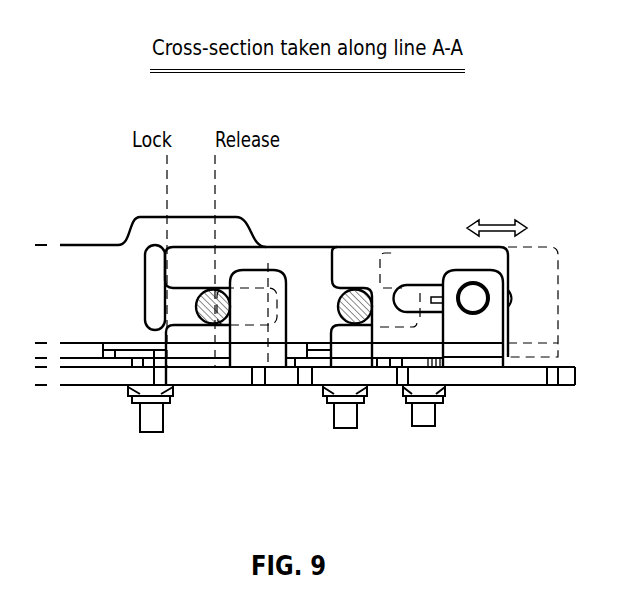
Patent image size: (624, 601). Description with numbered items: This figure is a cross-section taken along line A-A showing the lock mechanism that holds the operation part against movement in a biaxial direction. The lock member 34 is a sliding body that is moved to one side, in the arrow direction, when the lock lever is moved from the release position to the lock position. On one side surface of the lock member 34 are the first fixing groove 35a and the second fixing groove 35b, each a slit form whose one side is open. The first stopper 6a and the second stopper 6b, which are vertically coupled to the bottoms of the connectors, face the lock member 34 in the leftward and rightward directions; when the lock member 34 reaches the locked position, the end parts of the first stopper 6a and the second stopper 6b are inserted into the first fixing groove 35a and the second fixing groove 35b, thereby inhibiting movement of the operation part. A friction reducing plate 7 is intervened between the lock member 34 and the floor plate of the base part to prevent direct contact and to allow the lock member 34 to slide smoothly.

The lock member 34 is at (416, 260).
The second fixing groove 35b is at (198, 293).
The first fixing groove 35a is at (347, 325).
The second stopper 6b is at (190, 326).
The first stopper 6a is at (343, 305).
The friction reducing plate 7 is at (211, 364).